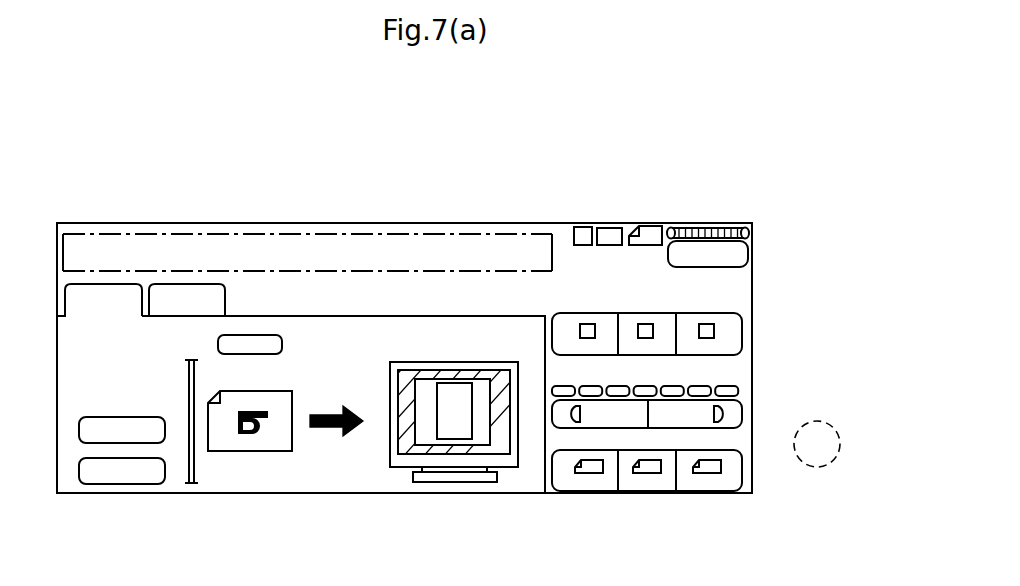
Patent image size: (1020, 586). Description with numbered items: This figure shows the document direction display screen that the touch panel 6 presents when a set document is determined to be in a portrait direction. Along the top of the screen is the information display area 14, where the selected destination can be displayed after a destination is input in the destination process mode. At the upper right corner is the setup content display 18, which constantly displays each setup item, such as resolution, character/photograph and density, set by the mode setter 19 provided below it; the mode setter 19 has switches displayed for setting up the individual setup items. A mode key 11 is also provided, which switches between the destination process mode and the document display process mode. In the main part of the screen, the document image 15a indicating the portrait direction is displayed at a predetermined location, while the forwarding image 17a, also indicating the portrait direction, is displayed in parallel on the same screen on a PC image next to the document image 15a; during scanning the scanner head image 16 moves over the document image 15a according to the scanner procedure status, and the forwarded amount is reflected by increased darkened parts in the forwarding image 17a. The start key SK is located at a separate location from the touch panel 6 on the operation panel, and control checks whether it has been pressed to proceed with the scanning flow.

The touch panel 6 is at (228, 196).
The information display area 14 is at (334, 236).
The setup content display 18 is at (645, 185).
The mode key 11 is at (738, 250).
The scanner head image 16 is at (192, 486).
The document image 15a is at (270, 441).
The forwarding image 17a is at (462, 436).
The mode setter 19 is at (758, 315).
The start key SK is at (822, 467).